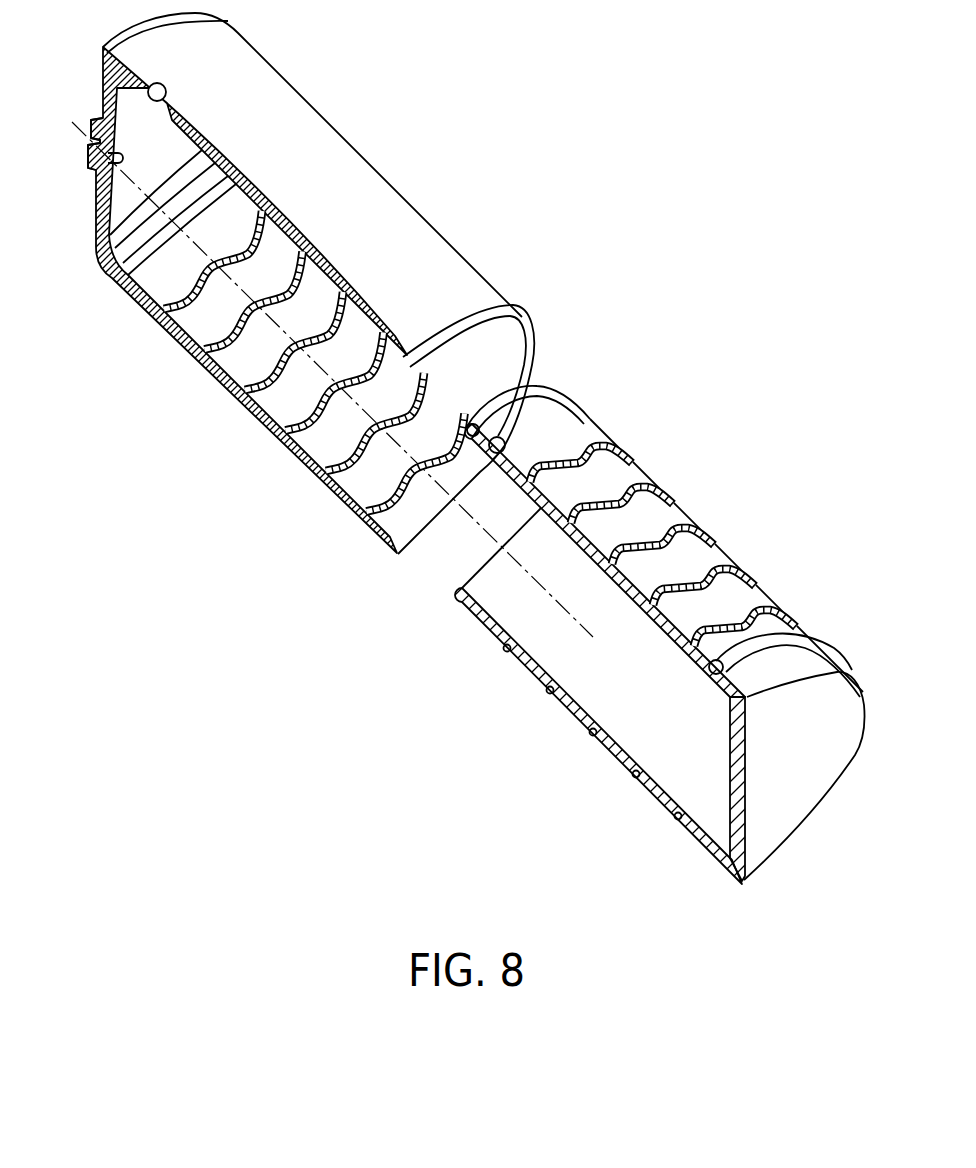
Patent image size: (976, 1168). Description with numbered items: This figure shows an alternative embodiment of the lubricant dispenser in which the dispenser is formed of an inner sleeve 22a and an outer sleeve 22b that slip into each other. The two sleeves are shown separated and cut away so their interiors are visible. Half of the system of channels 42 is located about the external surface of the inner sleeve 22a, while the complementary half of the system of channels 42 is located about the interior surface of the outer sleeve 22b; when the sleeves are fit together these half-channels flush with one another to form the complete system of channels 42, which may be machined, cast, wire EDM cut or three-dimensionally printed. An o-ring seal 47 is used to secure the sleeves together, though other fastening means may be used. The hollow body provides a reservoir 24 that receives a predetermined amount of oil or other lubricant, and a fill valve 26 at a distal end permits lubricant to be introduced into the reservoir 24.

The inner sleeve 22a is at (368, 190).
The outer sleeve 22b is at (770, 597).
The reservoir 24 is at (657, 752).
The fill valve 26 is at (93, 150).
The system of channels 42 is at (332, 488).
The o-ring seal 47 is at (566, 395).